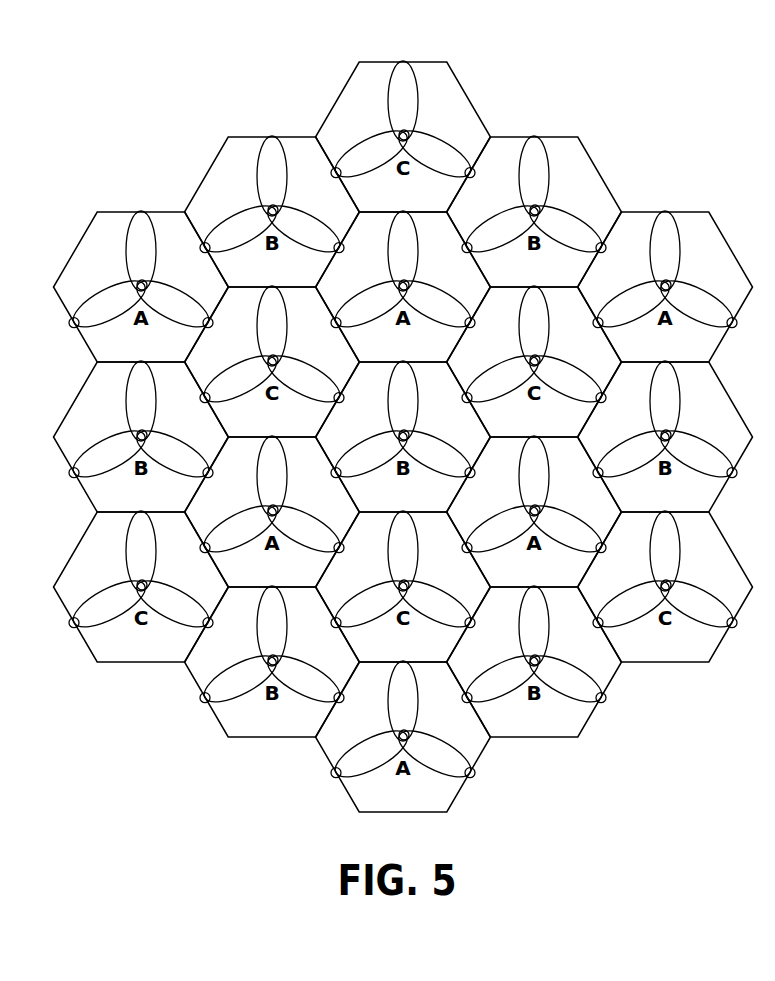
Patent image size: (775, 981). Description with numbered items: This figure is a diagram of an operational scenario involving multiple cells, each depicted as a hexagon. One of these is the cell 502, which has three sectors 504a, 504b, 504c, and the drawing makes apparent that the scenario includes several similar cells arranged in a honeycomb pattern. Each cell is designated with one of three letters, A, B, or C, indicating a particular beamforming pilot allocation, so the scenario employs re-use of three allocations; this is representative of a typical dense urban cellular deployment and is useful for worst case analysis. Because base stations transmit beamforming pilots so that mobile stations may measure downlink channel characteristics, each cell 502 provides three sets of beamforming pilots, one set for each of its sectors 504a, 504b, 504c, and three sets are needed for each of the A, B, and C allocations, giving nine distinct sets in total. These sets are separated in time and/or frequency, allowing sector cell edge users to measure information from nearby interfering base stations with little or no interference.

The cell 502 is at (228, 738).
The sector 504a is at (287, 723).
The sector 504b is at (331, 651).
The sector 504c is at (247, 651).